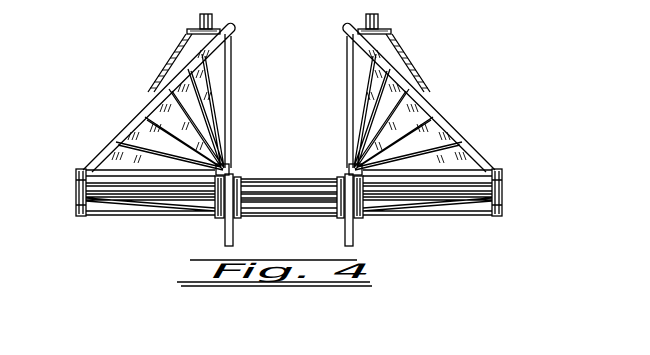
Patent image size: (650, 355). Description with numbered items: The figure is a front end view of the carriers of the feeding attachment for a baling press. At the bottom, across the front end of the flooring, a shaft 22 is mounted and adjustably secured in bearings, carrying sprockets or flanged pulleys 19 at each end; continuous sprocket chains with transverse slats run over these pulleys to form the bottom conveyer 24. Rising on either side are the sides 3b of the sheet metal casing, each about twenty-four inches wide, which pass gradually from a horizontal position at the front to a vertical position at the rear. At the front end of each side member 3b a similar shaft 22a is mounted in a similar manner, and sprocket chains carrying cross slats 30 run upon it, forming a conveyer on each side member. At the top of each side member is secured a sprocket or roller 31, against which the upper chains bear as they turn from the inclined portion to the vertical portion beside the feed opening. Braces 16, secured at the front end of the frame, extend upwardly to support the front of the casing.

The side 3b is at (119, 154).
The brace 16 is at (224, 233).
The flanged pulley 19 is at (80, 215).
The shaft 22 is at (265, 217).
The shaft 22a is at (76, 202).
The conveyer 24 is at (268, 178).
The cross slat 30 is at (362, 90).
The sprocket or roller 31 is at (198, 33).